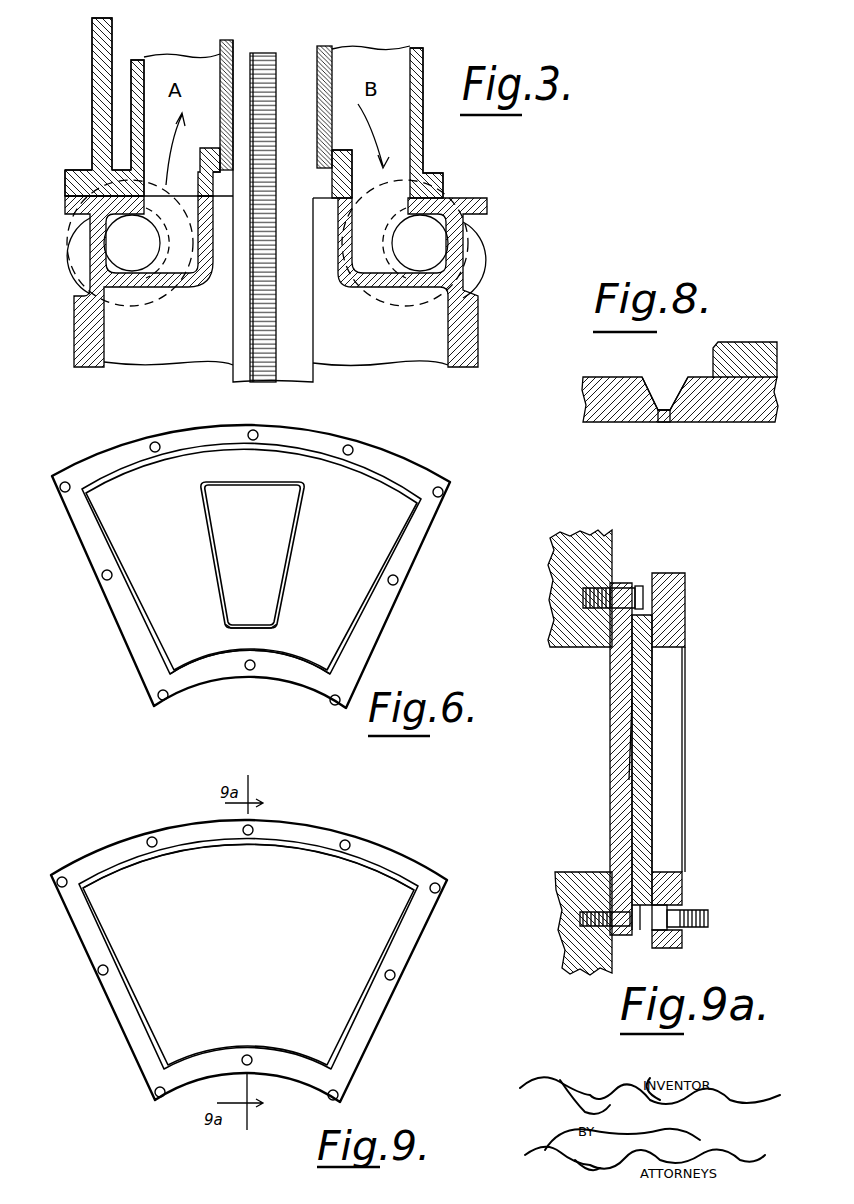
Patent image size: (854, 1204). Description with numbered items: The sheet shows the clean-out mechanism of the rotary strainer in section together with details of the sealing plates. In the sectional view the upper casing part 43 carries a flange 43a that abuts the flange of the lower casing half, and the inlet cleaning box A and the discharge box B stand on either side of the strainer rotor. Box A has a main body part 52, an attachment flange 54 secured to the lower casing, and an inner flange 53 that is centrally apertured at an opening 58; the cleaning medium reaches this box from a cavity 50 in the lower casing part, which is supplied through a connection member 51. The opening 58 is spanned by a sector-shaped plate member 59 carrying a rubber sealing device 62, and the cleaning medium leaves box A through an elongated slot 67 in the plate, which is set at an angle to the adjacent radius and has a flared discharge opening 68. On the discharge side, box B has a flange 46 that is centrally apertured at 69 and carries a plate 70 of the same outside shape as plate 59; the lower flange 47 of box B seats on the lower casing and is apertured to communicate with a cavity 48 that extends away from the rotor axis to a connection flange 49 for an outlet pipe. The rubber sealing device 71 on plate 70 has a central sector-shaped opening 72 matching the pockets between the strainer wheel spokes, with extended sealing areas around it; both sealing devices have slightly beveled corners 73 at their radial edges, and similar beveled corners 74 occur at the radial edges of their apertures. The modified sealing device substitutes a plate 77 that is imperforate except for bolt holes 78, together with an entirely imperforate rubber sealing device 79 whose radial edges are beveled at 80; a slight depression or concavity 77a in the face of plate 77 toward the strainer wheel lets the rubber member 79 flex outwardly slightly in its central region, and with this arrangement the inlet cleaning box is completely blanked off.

In FIG. 3, the upper casing part 43 is at (92, 38).
In FIG. 3, the flange of upper casing part 43a is at (68, 184).
In FIG. 3, the main body part of box A 52 is at (131, 87).
In FIG. 3, the attachment flange of box A 54 is at (118, 172).
In FIG. 3, the connection member 51 is at (72, 253).
In FIG. 3, the cavity 50 is at (130, 243).
In FIG. 3, the plate member 59 is at (220, 53).
In FIG. 8, the plate member 59 is at (738, 414).
In FIG. 3, the sealing device 62 is at (236, 46).
In FIG. 8, the sealing device 62 is at (741, 342).
In FIG. 3, the opening 58 is at (216, 132).
In FIG. 3, the inner flange of box A 53 is at (217, 173).
In FIG. 3, the flange of box B 46 is at (330, 172).
In FIG. 3, the central aperture of flange 46 69 is at (364, 133).
In FIG. 3, the plate 70 is at (326, 47).
In FIG. 6, the plate 70 is at (378, 625).
In FIG. 3, the lower flange of box B 47 is at (433, 173).
In FIG. 3, the cavity 48 is at (405, 243).
In FIG. 3, the connection flange 49 is at (481, 264).
In FIG. 8, the flared discharge opening 68 is at (657, 384).
In FIG. 8, the elongated slot 67 is at (662, 422).
In FIG. 6, the beveled corners 74 is at (262, 522).
In FIG. 6, the central sector shaped opening 72 is at (252, 625).
In FIG. 6, the beveled corners 73 is at (130, 597).
In FIG. 6, the rubber sealing device 71 is at (270, 660).
In FIG. 9, the bolt holes 78 is at (340, 842).
In FIG. 9, the rubber sealing device 79 is at (248, 884).
In FIG. 9A, the rubber sealing device 79 is at (650, 863).
In FIG. 9, the beveled radial edges 80 is at (392, 953).
In FIG. 9, the plate 77 is at (378, 1007).
In FIG. 9A, the plate 77 is at (615, 840).
In FIG. 9A, the depression or concavity 77a is at (630, 748).